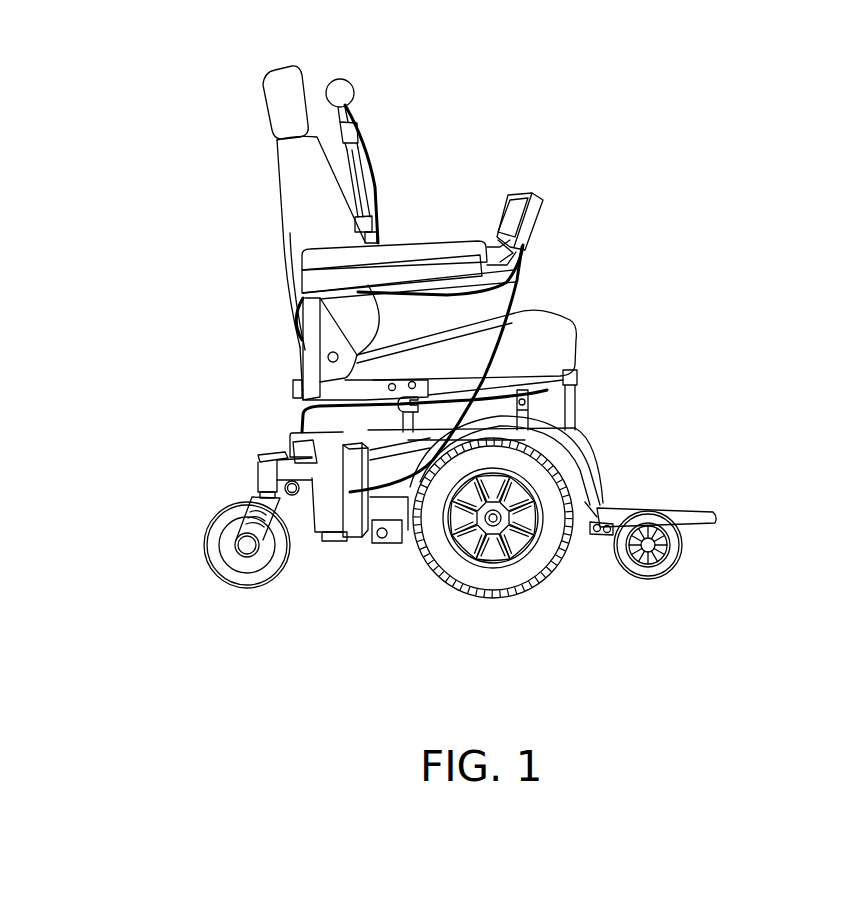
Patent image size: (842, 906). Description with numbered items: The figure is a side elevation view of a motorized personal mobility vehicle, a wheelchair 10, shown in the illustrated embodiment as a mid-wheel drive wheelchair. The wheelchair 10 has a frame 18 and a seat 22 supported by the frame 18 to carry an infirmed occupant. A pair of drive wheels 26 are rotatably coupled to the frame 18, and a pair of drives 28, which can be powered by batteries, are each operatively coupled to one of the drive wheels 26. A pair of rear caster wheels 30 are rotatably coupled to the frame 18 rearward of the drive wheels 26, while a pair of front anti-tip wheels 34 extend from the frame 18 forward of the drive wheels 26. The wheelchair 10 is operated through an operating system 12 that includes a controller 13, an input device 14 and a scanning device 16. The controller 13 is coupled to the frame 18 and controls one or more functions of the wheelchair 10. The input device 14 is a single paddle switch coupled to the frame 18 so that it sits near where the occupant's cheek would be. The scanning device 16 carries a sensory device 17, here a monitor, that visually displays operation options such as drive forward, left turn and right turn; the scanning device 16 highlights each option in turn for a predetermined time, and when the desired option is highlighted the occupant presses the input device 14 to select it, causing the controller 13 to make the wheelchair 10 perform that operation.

The wheelchair 10 is at (160, 108).
The operating system 12 is at (350, 515).
The controller 13 is at (357, 510).
The input device 14 is at (342, 92).
The scanning device 16 is at (530, 193).
The sensory device 17 is at (510, 208).
The frame 18 is at (347, 445).
The seat 22 is at (307, 240).
The drive wheels 26 is at (502, 598).
The drives 28 is at (513, 510).
The rear caster wheels 30 is at (208, 550).
The front anti-tip wheels 34 is at (665, 568).